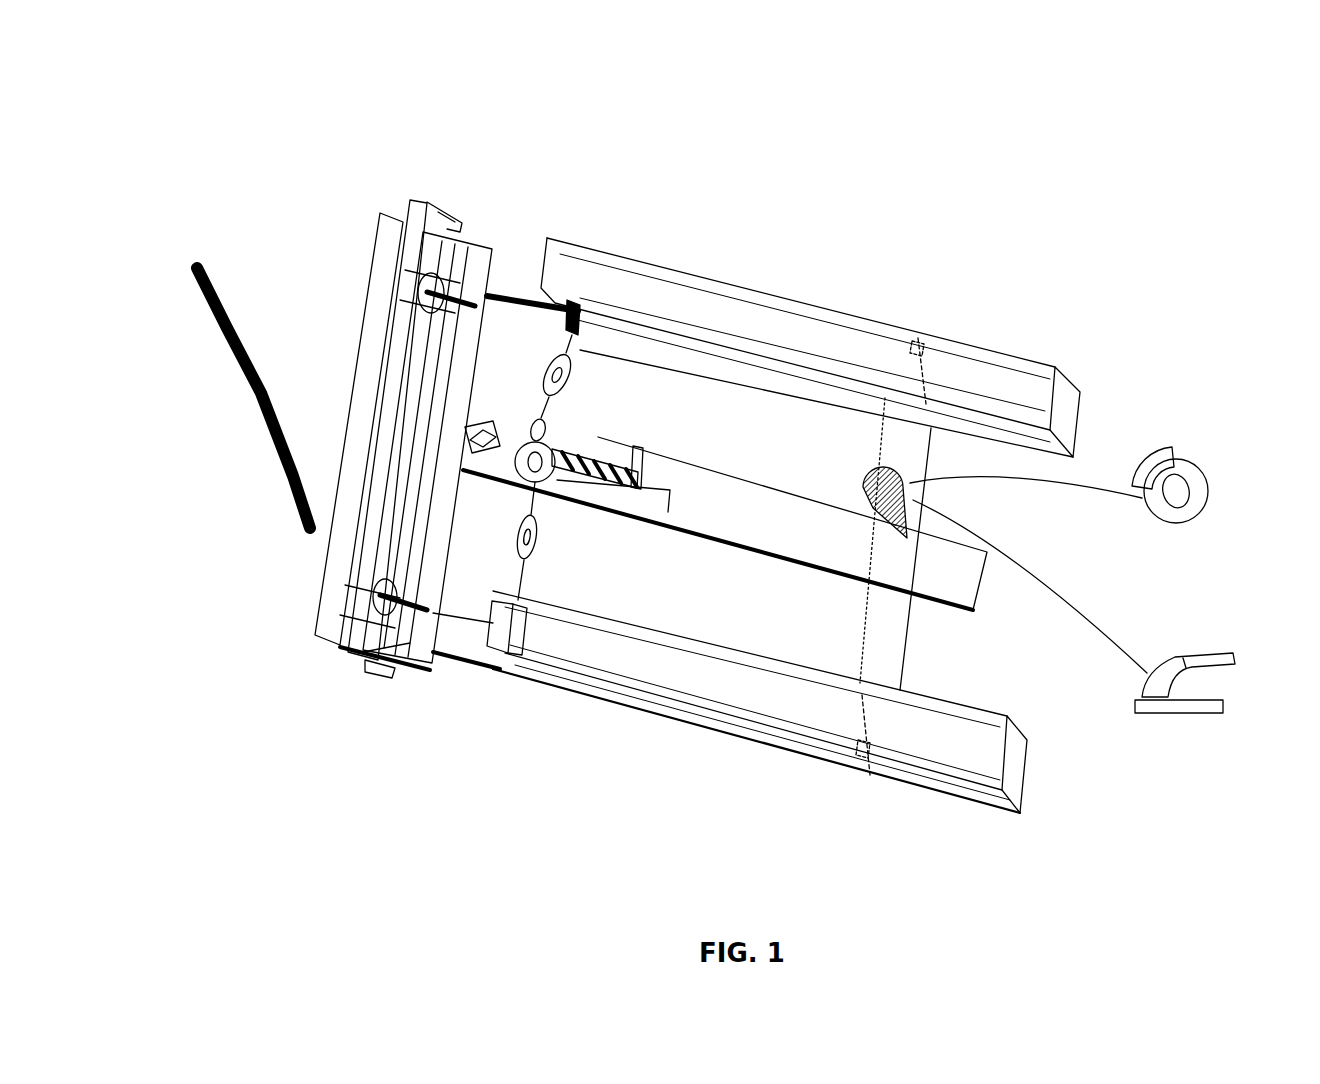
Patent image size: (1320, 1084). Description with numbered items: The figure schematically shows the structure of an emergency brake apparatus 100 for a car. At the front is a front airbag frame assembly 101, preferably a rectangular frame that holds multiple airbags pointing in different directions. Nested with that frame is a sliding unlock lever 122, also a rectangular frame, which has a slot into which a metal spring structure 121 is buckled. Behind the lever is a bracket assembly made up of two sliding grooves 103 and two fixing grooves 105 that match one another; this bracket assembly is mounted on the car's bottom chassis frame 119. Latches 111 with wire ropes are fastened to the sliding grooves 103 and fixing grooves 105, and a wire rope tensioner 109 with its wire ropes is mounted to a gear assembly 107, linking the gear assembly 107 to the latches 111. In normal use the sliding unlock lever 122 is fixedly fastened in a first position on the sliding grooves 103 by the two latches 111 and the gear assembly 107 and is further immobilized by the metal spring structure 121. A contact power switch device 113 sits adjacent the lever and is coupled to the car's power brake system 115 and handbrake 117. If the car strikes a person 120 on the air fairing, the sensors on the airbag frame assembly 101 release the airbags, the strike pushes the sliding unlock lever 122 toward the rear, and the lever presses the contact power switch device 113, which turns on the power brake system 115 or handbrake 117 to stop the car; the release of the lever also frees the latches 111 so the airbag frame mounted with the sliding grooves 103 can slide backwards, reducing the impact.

The emergency brake apparatus 100 is at (880, 121).
The front airbag frame assembly 101 is at (308, 658).
The sliding grooves 103 is at (557, 263).
The fixing grooves 105 is at (1030, 383).
The gear assembly 107 is at (607, 452).
The wire rope tensioner 109 is at (563, 373).
The latches 111 is at (577, 305).
The contact power switch device 113 is at (880, 473).
The power brake system 115 is at (1195, 473).
The handbrake 117 is at (1202, 705).
The bottom chassis frame 119 is at (920, 437).
The person 120 is at (223, 343).
The metal spring structure 121 is at (474, 423).
The sliding unlock lever 122 is at (506, 430).